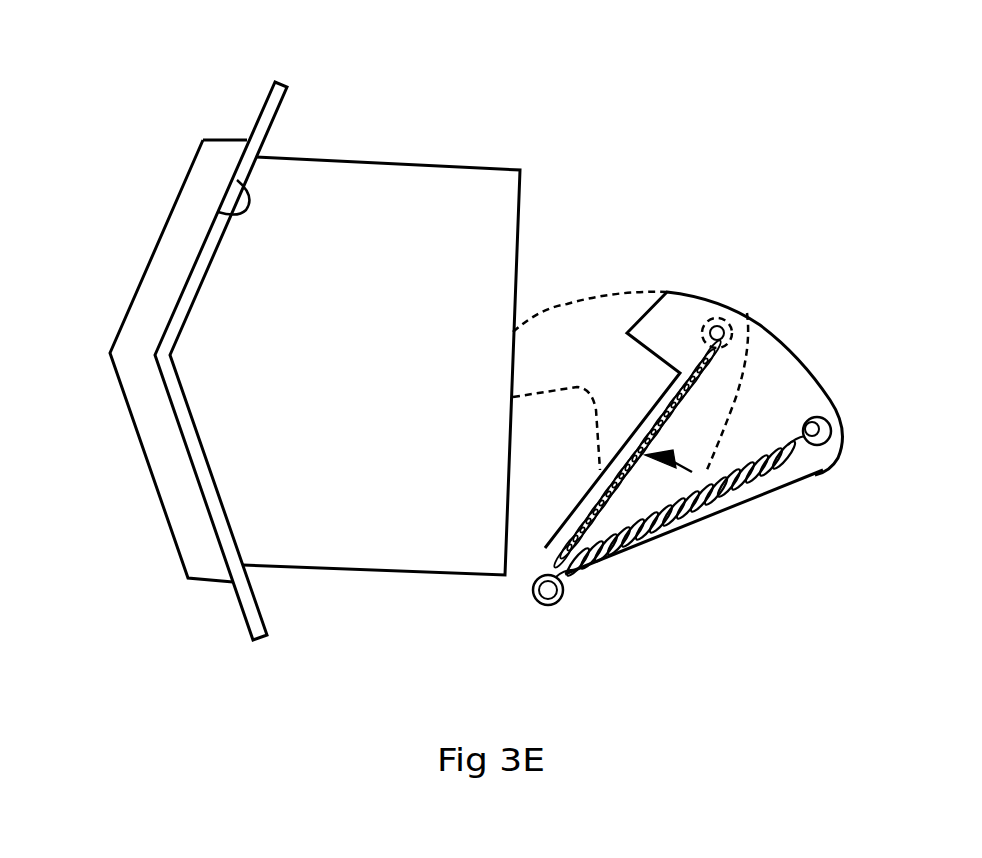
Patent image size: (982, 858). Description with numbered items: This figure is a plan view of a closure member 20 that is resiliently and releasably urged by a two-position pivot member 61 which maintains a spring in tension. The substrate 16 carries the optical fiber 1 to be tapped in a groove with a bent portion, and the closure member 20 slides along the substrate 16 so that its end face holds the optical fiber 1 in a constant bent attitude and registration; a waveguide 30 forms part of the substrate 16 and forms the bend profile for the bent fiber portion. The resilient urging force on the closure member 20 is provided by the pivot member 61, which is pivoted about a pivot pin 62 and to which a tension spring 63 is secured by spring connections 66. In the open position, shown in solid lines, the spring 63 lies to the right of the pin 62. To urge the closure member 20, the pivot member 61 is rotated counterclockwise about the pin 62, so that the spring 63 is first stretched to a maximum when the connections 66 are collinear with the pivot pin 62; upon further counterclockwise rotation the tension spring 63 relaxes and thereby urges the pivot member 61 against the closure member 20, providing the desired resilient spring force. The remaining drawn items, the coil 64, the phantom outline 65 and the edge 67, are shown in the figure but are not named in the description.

The optical fiber 1 is at (263, 103).
The substrate 16 is at (157, 270).
The closure member 20 is at (348, 270).
The waveguide 30 is at (237, 180).
The pivot member 61 is at (773, 340).
The pivot pin 62 is at (620, 460).
The tension spring 63 is at (610, 580).
The coil spring 64 is at (752, 503).
The bracket phantom position 65 is at (567, 305).
The spring connections 66 is at (817, 417).
The bracket edge 67 is at (824, 471).